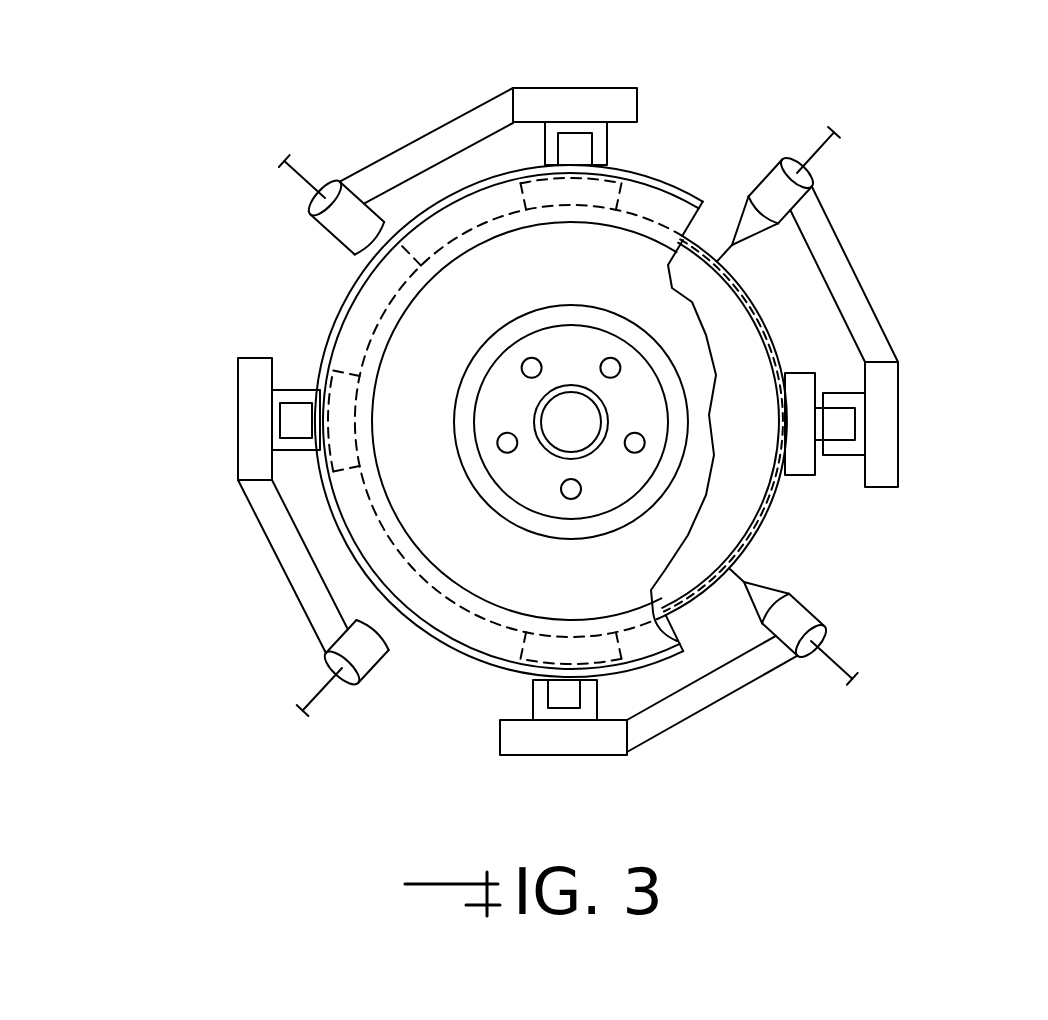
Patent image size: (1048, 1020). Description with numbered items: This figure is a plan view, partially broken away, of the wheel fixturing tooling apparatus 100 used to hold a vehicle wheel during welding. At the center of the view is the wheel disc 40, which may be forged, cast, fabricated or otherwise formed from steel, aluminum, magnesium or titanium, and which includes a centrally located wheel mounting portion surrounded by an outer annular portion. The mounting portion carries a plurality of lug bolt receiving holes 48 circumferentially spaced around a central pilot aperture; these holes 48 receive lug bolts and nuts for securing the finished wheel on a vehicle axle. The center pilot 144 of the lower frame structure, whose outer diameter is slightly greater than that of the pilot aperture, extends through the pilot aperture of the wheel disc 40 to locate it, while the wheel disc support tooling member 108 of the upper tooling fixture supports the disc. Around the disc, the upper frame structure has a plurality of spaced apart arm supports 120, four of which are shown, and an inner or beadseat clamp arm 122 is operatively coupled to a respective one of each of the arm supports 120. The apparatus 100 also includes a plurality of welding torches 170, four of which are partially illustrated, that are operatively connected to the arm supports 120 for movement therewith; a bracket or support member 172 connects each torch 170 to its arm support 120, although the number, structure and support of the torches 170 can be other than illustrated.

The wheel fixturing tooling apparatus 100 is at (592, 414).
The wheel disc 40 is at (582, 394).
The wheel disc support tooling member 108 is at (667, 168).
The center pilot 144 is at (573, 437).
The lug bolt receiving holes 48 is at (532, 360).
The arm supports 120 is at (574, 100).
The beadseat clamp arm 122 is at (473, 190).
The welding torches 170 is at (333, 218).
The bracket or support member 172 is at (462, 116).